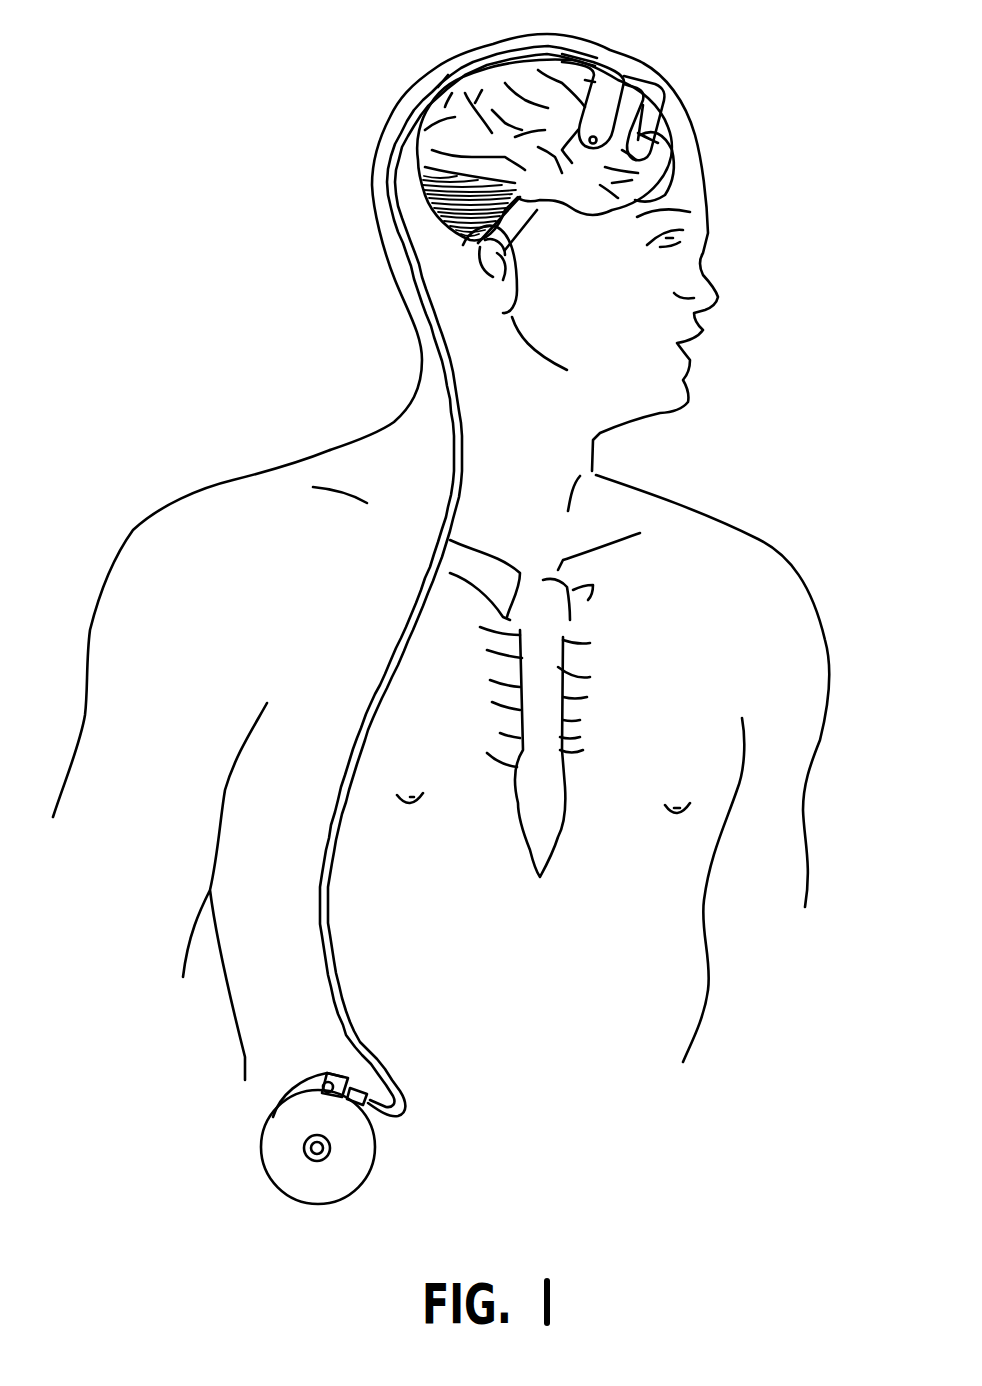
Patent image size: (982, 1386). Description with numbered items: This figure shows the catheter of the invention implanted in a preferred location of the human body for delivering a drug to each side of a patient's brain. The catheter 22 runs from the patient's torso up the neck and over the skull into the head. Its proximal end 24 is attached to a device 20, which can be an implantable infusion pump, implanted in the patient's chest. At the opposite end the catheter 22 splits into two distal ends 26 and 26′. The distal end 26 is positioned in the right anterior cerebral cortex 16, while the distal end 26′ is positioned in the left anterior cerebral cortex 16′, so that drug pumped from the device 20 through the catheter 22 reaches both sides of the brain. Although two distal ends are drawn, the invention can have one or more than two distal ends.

The right anterior cerebral cortex 16 is at (572, 186).
The left anterior cerebral cortex 16′ is at (660, 177).
The device 20 is at (350, 1172).
The catheter 22 is at (335, 950).
The proximal end 24 is at (337, 1073).
The distal end 26 is at (594, 128).
The distal end 26′ is at (663, 127).